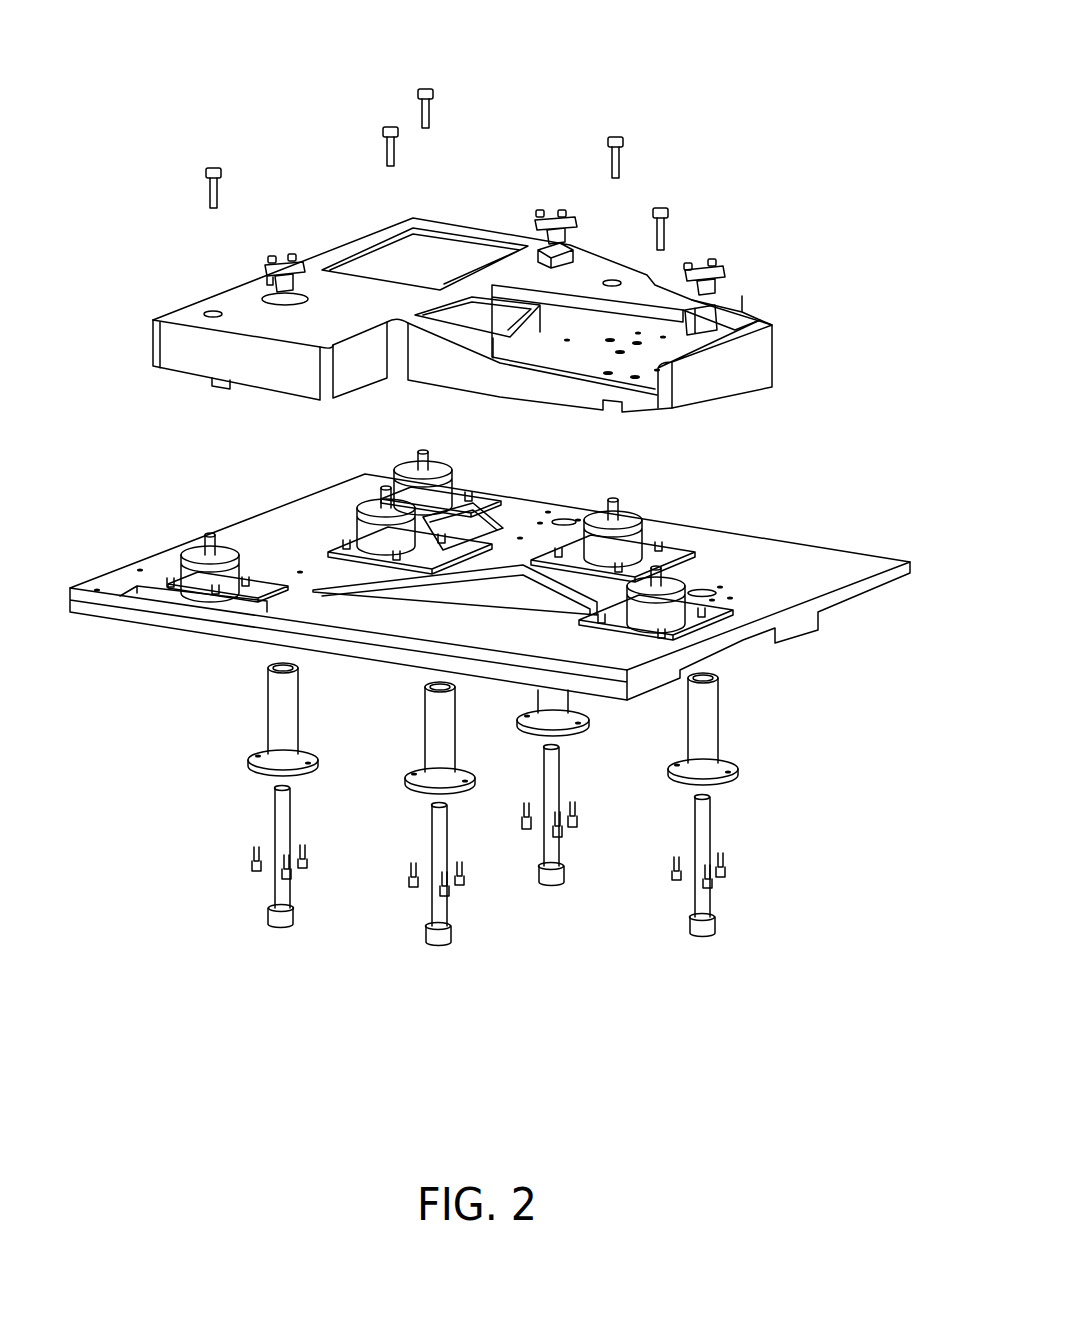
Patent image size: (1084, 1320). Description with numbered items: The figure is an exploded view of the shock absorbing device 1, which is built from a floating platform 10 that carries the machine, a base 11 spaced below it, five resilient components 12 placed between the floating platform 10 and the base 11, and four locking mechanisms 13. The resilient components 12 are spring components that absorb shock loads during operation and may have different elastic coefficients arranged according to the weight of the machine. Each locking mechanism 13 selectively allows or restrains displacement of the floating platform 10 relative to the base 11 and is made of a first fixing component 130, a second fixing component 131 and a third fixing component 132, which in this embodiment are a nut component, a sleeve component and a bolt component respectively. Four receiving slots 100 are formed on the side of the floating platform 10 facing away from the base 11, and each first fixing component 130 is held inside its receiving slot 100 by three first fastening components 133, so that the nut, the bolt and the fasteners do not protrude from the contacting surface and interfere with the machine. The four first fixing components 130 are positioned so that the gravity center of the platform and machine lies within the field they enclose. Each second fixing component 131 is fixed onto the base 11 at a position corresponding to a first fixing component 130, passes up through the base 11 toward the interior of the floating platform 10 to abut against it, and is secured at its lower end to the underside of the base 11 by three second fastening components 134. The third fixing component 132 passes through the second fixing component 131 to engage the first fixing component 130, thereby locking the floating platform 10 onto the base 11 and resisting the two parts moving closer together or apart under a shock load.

The shock absorbing device 1 is at (778, 55).
The floating platform 10 is at (760, 358).
The receiving slot 100 is at (258, 293).
The first fixing component 130 is at (282, 262).
The first fastening component 133 is at (688, 267).
The base 11 is at (827, 562).
The resilient component 12 is at (203, 552).
The locking mechanism 13 is at (283, 988).
The second fixing component 131 is at (288, 713).
The third fixing component 132 is at (280, 813).
The second fastening component 134 is at (665, 863).